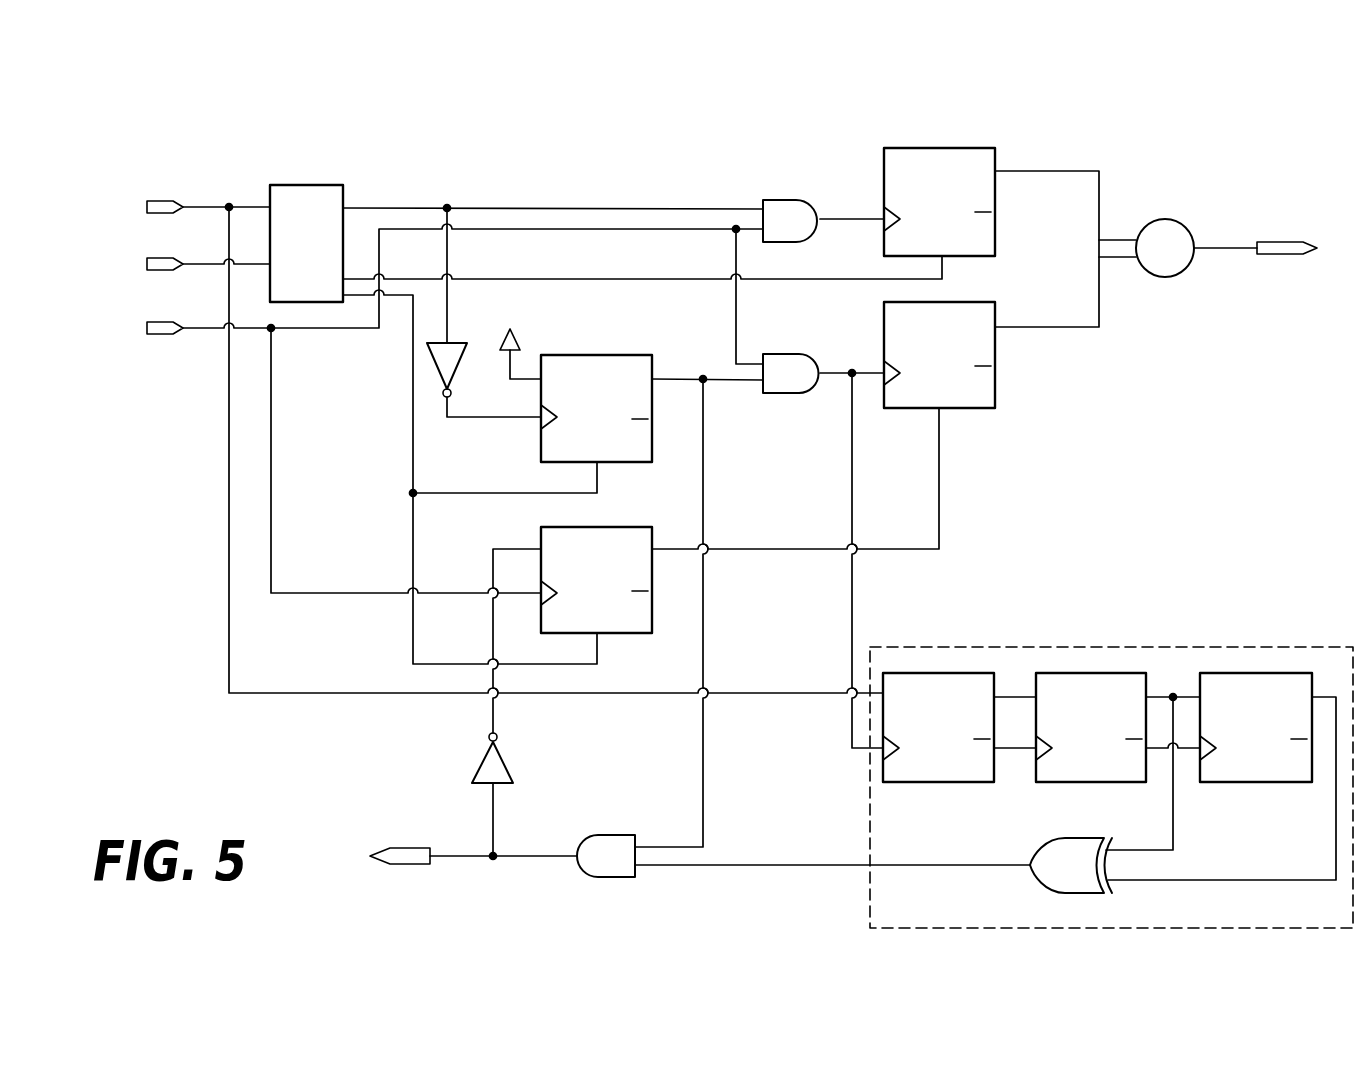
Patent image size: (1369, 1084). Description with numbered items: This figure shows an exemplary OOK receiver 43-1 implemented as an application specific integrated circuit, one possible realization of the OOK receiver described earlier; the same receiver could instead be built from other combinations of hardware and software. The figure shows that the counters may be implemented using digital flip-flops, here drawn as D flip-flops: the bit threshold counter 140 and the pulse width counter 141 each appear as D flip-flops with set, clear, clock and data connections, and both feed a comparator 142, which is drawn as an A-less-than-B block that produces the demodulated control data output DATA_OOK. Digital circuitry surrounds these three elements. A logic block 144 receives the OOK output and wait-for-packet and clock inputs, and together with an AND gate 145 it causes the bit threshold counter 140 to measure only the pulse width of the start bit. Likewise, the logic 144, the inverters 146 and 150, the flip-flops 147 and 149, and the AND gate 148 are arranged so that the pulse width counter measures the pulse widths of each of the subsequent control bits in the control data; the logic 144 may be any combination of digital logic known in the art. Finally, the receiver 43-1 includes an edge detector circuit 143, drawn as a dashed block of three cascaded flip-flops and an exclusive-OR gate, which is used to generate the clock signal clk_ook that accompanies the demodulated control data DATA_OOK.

The OOK receiver 43-1 is at (1078, 120).
The bit threshold counter 140 is at (884, 192).
The pulse width counter 141 is at (997, 365).
The comparator 142 is at (1163, 277).
The edge detector circuit 143 is at (1112, 647).
The logic 144 is at (307, 185).
The AND gate 145 is at (785, 200).
The inverter 146 is at (462, 340).
The flip-flop 147 is at (595, 355).
The AND gate 148 is at (780, 395).
The flip-flop 149 is at (620, 527).
The inverter 150 is at (507, 762).